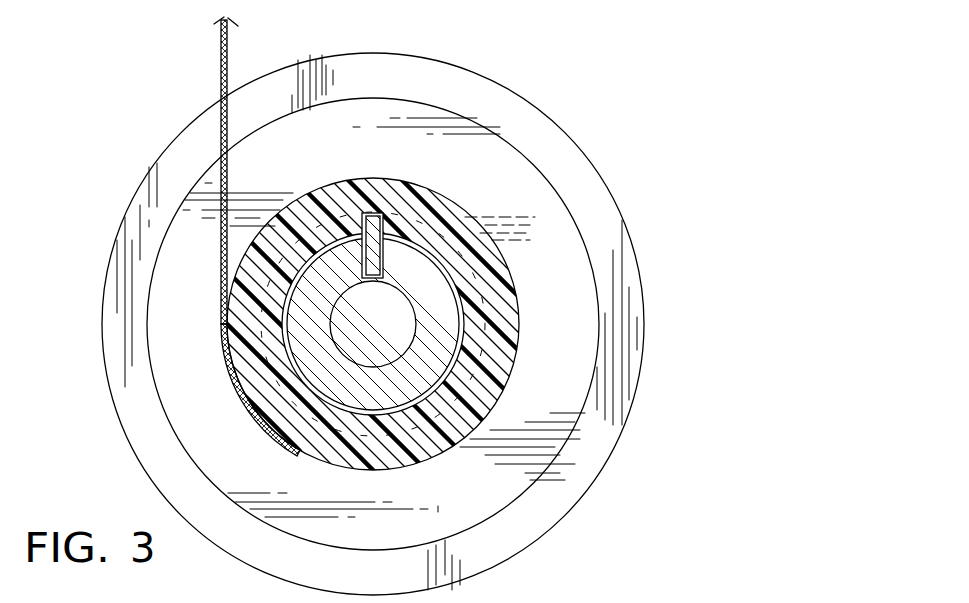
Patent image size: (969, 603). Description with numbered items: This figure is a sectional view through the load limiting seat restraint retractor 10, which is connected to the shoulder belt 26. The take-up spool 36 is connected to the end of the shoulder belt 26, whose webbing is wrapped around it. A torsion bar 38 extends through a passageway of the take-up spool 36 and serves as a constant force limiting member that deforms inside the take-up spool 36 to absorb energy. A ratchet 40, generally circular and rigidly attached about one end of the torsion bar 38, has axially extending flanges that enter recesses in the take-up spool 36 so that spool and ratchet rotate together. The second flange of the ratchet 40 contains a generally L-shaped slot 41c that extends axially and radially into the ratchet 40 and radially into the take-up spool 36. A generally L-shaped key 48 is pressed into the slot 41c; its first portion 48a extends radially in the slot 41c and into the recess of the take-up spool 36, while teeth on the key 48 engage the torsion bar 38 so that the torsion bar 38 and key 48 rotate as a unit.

The load limiting seat restraint retractor 10 is at (530, 68).
The shoulder belt 26 is at (221, 62).
The take-up spool 36 is at (443, 453).
The torsion bar 38 is at (393, 352).
The ratchet 40 is at (455, 368).
The slot 41c is at (358, 228).
The key 48 is at (341, 154).
The first portion 48a is at (380, 247).